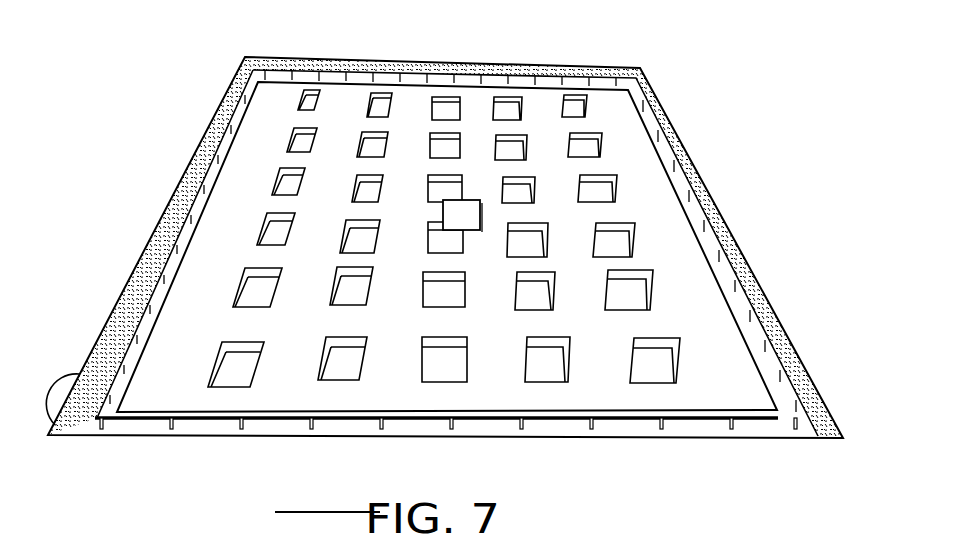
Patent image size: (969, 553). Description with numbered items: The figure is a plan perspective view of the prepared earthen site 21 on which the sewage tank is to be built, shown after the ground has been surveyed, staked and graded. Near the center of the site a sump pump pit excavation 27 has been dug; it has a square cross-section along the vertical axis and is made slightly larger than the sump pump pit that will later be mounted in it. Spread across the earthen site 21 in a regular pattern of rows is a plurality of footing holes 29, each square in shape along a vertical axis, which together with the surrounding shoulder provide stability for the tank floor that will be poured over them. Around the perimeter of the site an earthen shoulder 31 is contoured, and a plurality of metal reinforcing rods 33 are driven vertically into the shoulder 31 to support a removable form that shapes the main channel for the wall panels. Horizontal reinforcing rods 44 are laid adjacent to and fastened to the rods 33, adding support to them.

The earthen site 21 is at (658, 210).
The sump pump pit excavation 27 is at (462, 212).
The footing holes 29 is at (272, 182).
The earthen shoulder 31 is at (527, 73).
The metal reinforcing rods 33 is at (407, 72).
The reinforcing rods 44 is at (113, 420).